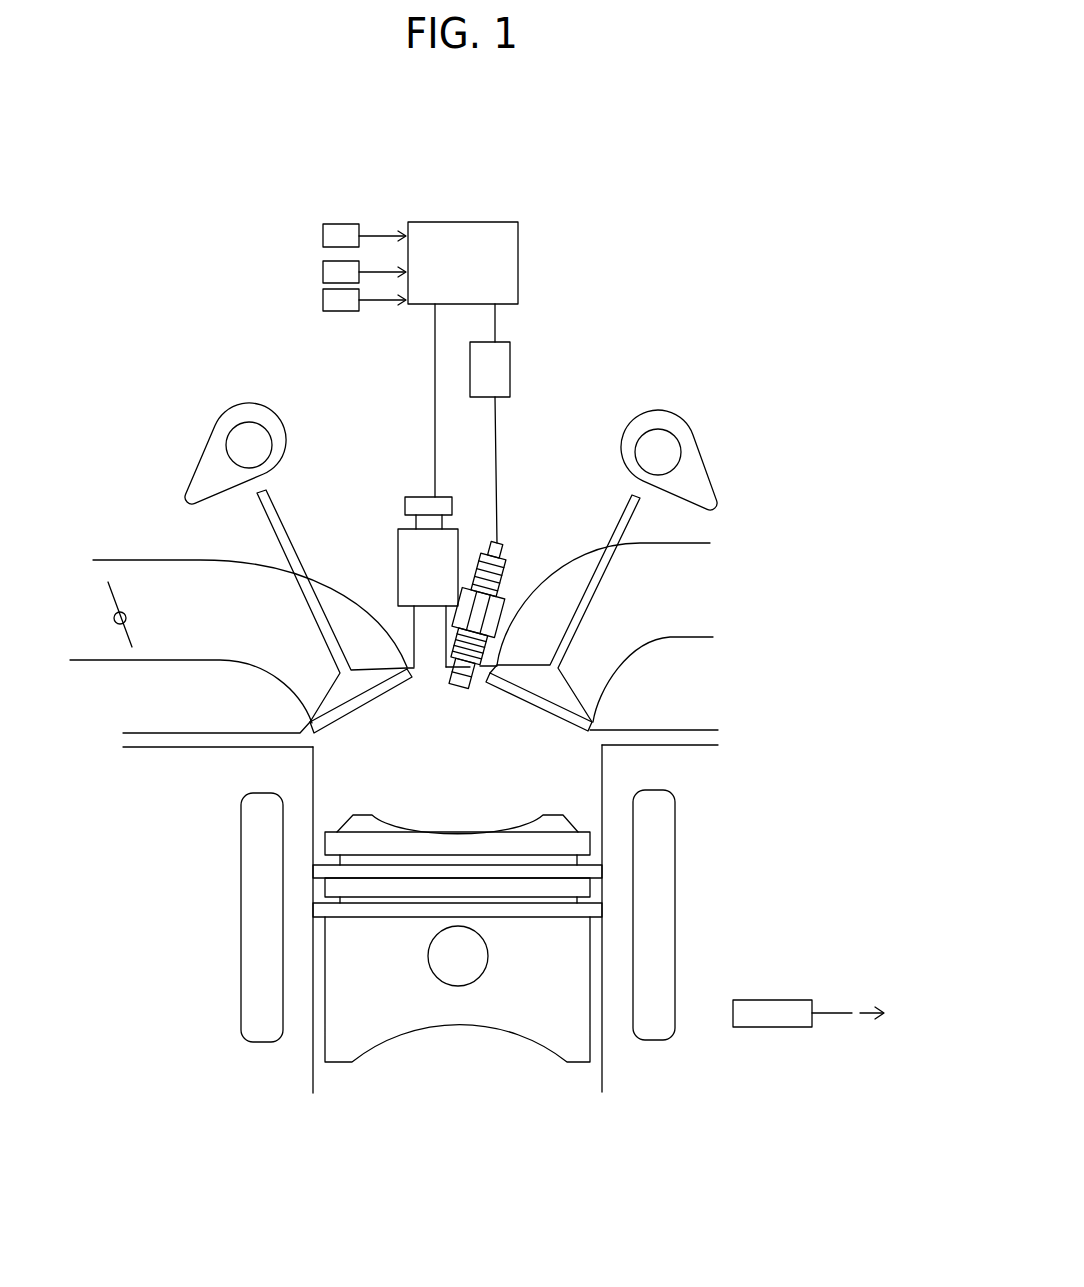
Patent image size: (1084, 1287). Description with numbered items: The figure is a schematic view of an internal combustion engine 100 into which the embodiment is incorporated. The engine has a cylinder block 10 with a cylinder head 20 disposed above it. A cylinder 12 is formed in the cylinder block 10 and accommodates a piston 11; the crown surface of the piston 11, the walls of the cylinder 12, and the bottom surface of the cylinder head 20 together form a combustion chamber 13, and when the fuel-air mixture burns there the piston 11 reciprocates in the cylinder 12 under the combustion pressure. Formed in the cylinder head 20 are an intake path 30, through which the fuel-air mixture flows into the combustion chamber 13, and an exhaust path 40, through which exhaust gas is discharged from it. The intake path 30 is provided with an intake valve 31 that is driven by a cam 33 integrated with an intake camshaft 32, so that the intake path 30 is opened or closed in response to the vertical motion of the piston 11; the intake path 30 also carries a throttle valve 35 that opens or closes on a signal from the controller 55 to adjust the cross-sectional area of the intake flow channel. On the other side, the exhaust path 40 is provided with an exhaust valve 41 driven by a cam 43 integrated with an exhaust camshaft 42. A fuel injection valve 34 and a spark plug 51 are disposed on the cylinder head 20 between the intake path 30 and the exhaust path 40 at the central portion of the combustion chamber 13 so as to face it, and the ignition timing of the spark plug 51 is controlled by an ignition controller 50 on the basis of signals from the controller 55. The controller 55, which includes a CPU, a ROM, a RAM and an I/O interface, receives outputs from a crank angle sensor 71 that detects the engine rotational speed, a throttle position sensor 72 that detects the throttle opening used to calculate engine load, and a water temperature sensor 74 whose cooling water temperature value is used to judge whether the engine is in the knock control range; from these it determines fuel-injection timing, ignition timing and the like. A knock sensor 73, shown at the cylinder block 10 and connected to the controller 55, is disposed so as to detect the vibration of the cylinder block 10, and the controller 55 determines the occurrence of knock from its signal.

The internal combustion engine 100 is at (750, 381).
The cylinder block 10 is at (685, 903).
The piston 11 is at (523, 1017).
The cylinder 12 is at (307, 762).
The combustion chamber 13 is at (557, 763).
The cylinder head 20 is at (703, 707).
The intake path 30 is at (332, 600).
The intake valve 31 is at (283, 520).
The intake camshaft 32 is at (250, 445).
The cam 33 is at (213, 460).
The fuel injection valve 34 is at (416, 503).
The throttle valve 35 is at (115, 597).
The exhaust path 40 is at (582, 560).
The exhaust valve 41 is at (632, 493).
The exhaust camshaft 42 is at (665, 445).
The cam 43 is at (703, 490).
The ignition controller 50 is at (511, 368).
The spark plug 51 is at (499, 538).
The controller 55 is at (519, 265).
The crank angle sensor 71 is at (322, 235).
The throttle position sensor 72 is at (322, 272).
The knock sensor 73 is at (803, 1027).
The water temperature sensor 74 is at (322, 303).